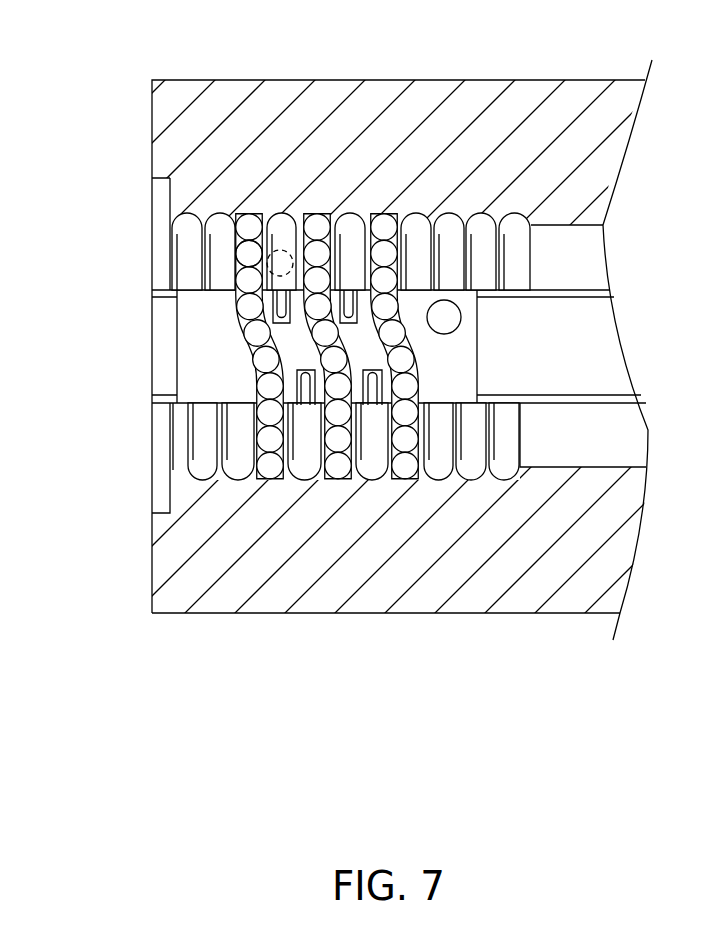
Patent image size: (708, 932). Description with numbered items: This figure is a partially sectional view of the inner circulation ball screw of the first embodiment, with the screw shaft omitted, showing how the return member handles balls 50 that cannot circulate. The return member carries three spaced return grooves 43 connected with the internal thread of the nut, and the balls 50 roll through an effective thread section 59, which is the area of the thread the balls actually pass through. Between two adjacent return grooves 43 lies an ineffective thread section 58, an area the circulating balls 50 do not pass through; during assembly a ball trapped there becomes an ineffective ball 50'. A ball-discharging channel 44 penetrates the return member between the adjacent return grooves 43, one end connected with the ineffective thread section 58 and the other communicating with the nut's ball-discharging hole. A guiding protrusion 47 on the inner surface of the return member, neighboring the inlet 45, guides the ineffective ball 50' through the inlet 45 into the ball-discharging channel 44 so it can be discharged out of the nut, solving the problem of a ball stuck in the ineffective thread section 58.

The return groove 43 is at (259, 314).
The ball-discharging channel 44 is at (281, 301).
The inlet 45 is at (262, 306).
The guiding protrusion 47 is at (255, 324).
The ball 50 is at (157, 204).
The ineffective ball 50' is at (320, 139).
The ineffective thread section 58 is at (277, 213).
The effective thread section 59 is at (250, 213).